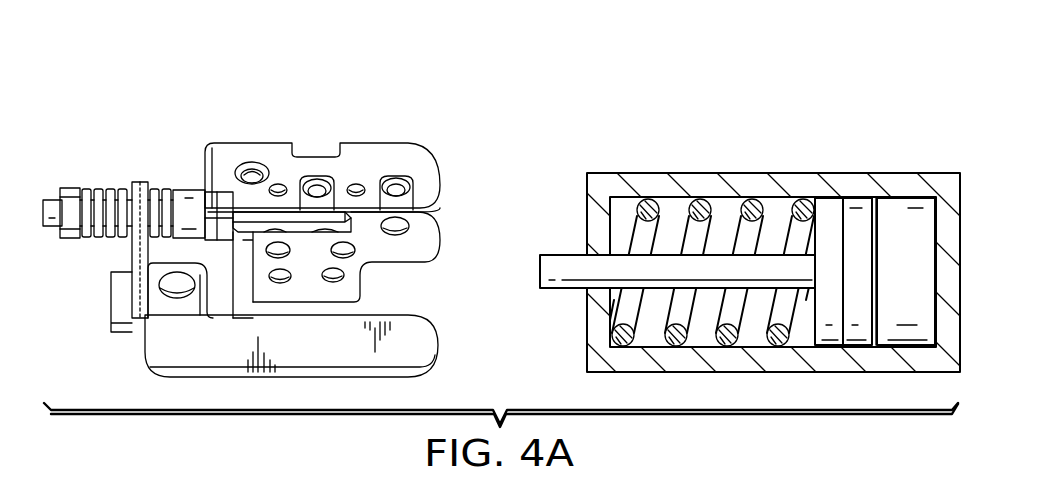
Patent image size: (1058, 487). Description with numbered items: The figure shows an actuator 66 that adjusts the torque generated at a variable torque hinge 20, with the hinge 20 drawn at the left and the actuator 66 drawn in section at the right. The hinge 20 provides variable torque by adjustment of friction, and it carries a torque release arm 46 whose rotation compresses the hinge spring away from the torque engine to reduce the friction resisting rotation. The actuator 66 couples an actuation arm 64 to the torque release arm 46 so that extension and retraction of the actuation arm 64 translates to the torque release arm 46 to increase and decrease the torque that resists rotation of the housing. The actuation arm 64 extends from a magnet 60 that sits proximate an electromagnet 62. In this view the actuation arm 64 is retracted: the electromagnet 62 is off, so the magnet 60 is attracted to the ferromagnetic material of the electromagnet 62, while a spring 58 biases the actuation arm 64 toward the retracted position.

The hinge 20 is at (211, 85).
The torque release arm 46 is at (143, 346).
The spring 58 is at (723, 210).
The magnet 60 is at (828, 210).
The electromagnet 62 is at (898, 210).
The actuation arm 64 is at (557, 254).
The actuator 66 is at (815, 108).